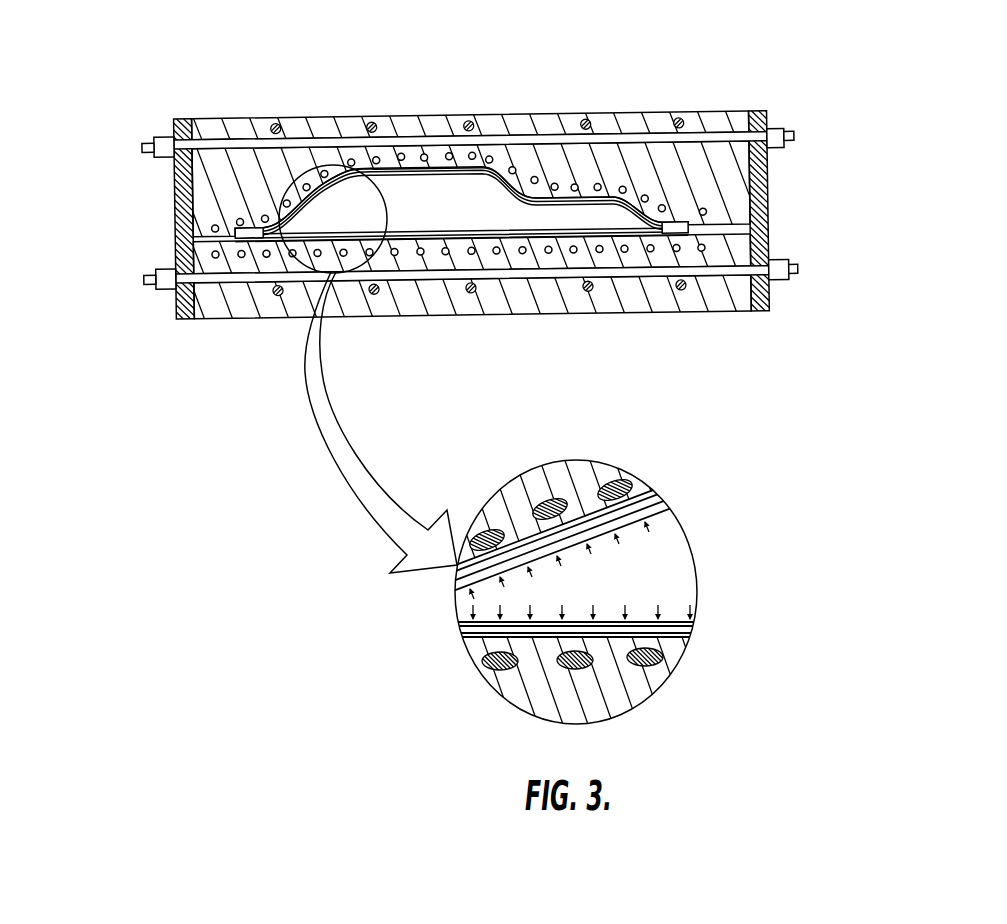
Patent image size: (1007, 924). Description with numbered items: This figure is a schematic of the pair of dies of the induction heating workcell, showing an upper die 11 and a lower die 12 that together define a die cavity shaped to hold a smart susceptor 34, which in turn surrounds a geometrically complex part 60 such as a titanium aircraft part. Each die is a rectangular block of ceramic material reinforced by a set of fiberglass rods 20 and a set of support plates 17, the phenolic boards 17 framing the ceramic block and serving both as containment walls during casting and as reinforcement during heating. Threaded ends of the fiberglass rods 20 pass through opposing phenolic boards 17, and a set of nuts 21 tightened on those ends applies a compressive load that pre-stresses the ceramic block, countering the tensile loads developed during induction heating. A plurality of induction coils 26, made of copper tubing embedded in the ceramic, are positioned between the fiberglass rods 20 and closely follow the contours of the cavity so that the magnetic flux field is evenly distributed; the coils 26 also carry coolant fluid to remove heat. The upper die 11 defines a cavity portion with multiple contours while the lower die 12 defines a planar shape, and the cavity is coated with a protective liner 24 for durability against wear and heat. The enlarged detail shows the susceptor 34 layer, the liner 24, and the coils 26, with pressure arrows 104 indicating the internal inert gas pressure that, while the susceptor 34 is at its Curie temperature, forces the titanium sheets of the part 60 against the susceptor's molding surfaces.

The upper die 11 is at (488, 220).
The lower die 12 is at (219, 311).
The support plates 17 is at (771, 194).
The fiberglass rods 20 is at (518, 226).
The nuts 21 is at (785, 139).
The protective liner 24 is at (660, 487).
The induction coils 26 is at (651, 668).
The smart susceptor 34 is at (669, 498).
The geometrically complex part 60 is at (677, 510).
The pressure arrows 104 is at (652, 532).